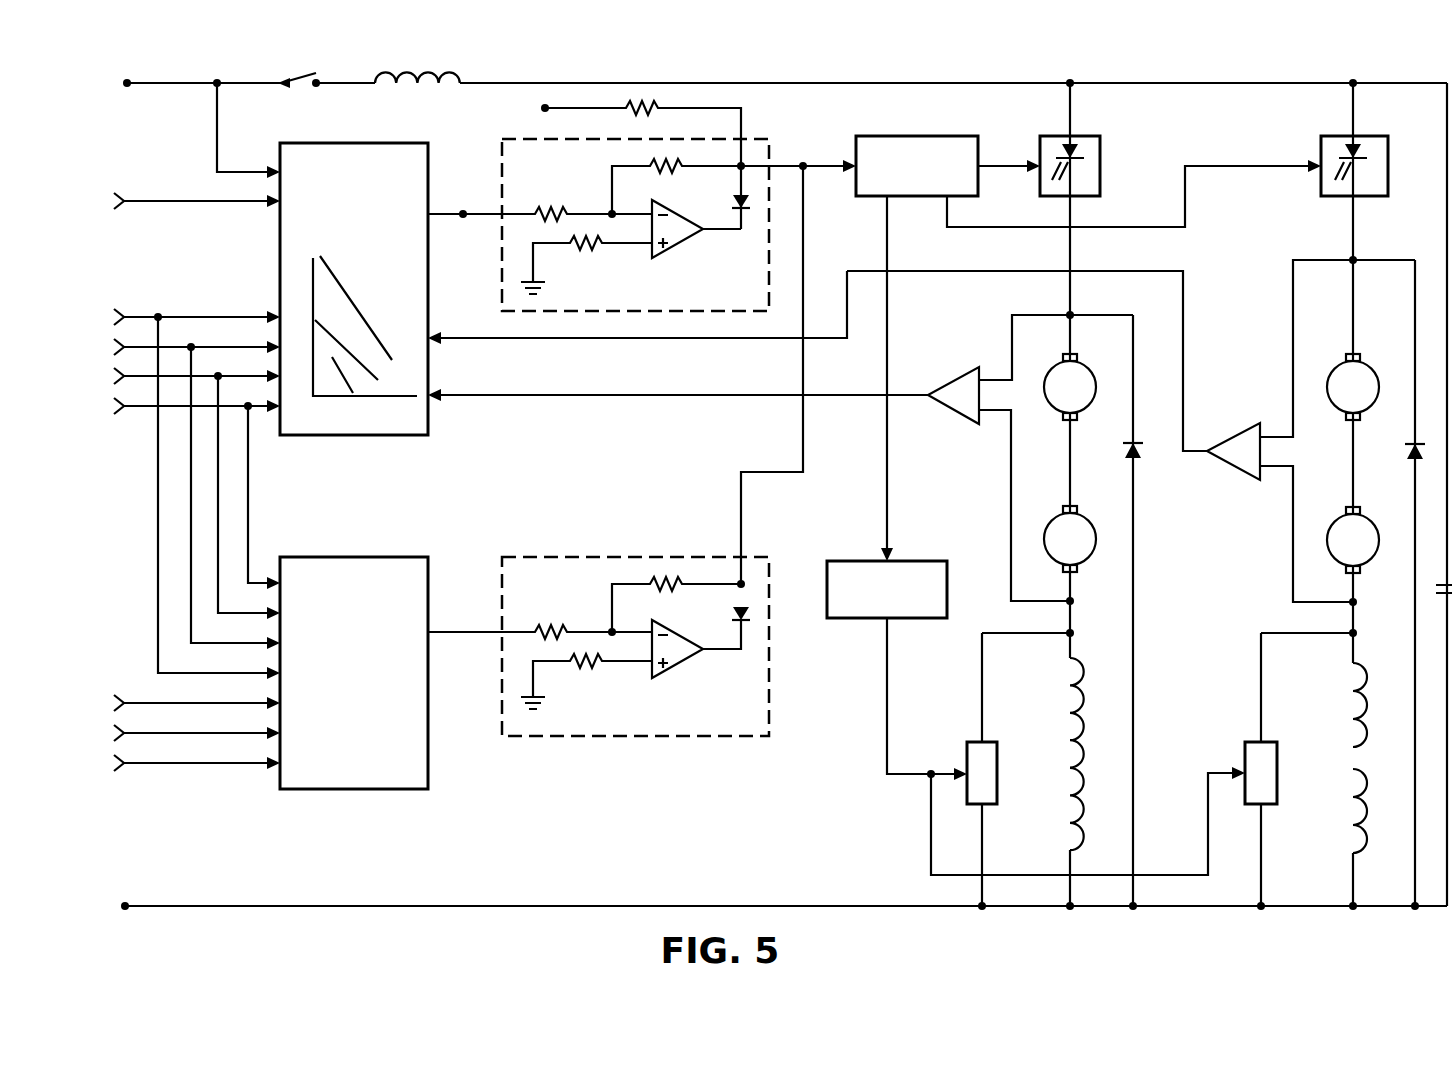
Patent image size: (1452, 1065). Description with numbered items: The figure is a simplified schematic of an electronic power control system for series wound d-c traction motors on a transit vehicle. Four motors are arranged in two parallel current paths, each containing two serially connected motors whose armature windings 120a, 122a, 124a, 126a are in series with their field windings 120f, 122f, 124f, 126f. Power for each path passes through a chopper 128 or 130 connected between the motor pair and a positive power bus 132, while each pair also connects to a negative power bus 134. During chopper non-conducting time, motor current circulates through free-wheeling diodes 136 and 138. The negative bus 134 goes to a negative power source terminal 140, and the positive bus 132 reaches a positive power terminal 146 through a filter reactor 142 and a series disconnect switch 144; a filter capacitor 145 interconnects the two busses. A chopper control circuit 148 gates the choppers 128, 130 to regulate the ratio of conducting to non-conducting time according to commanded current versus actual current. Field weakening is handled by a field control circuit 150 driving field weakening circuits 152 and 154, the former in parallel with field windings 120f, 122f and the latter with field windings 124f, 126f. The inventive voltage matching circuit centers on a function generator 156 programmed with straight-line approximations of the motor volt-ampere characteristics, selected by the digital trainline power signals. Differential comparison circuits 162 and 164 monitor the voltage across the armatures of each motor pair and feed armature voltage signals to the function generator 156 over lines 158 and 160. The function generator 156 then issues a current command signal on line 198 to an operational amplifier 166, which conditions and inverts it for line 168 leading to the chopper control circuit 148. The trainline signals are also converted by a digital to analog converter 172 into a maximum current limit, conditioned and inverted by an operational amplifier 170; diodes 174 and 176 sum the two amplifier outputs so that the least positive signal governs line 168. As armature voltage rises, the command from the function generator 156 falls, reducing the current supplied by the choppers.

The armature winding of motor 120 120a is at (1090, 372).
The field winding of motor 120 120f is at (1068, 685).
The armature winding of motor 122 122a is at (1090, 526).
The field winding of motor 122 122f is at (1070, 801).
The armature winding of motor 124 124a is at (1375, 368).
The field winding of motor 124 124f is at (1344, 695).
The armature winding of motor 126 126a is at (1372, 526).
The field winding of motor 126 126f is at (1344, 815).
The chopper 128 is at (1098, 150).
The chopper 130 is at (1386, 140).
The positive power bus 132 is at (880, 82).
The negative power bus 134 is at (861, 904).
The free-wheeling diode 136 is at (1142, 455).
The free-wheeling diode 138 is at (1407, 446).
The negative power source terminal 140 is at (125, 912).
The filter reactor 142 is at (433, 72).
The series disconnect switch 144 is at (300, 81).
The filter capacitor 145 is at (1435, 586).
The positive power terminal 146 is at (127, 82).
The chopper control circuit 148 is at (951, 138).
The field control circuit 150 is at (932, 558).
The field weakening circuit 152 is at (967, 742).
The field weakening circuit 154 is at (1245, 742).
The function generator 156 is at (280, 230).
The line 158 is at (621, 414).
The line 160 is at (621, 356).
The differential comparison circuit 162 is at (958, 378).
The differential comparison circuit 164 is at (1250, 420).
The operational amplifier 166 is at (676, 288).
The line 168 is at (830, 164).
The operational amplifier 170 is at (683, 718).
The digital to analog converter 172 is at (378, 555).
The diode 174 is at (730, 202).
The diode 176 is at (735, 616).
The line 198 is at (463, 211).